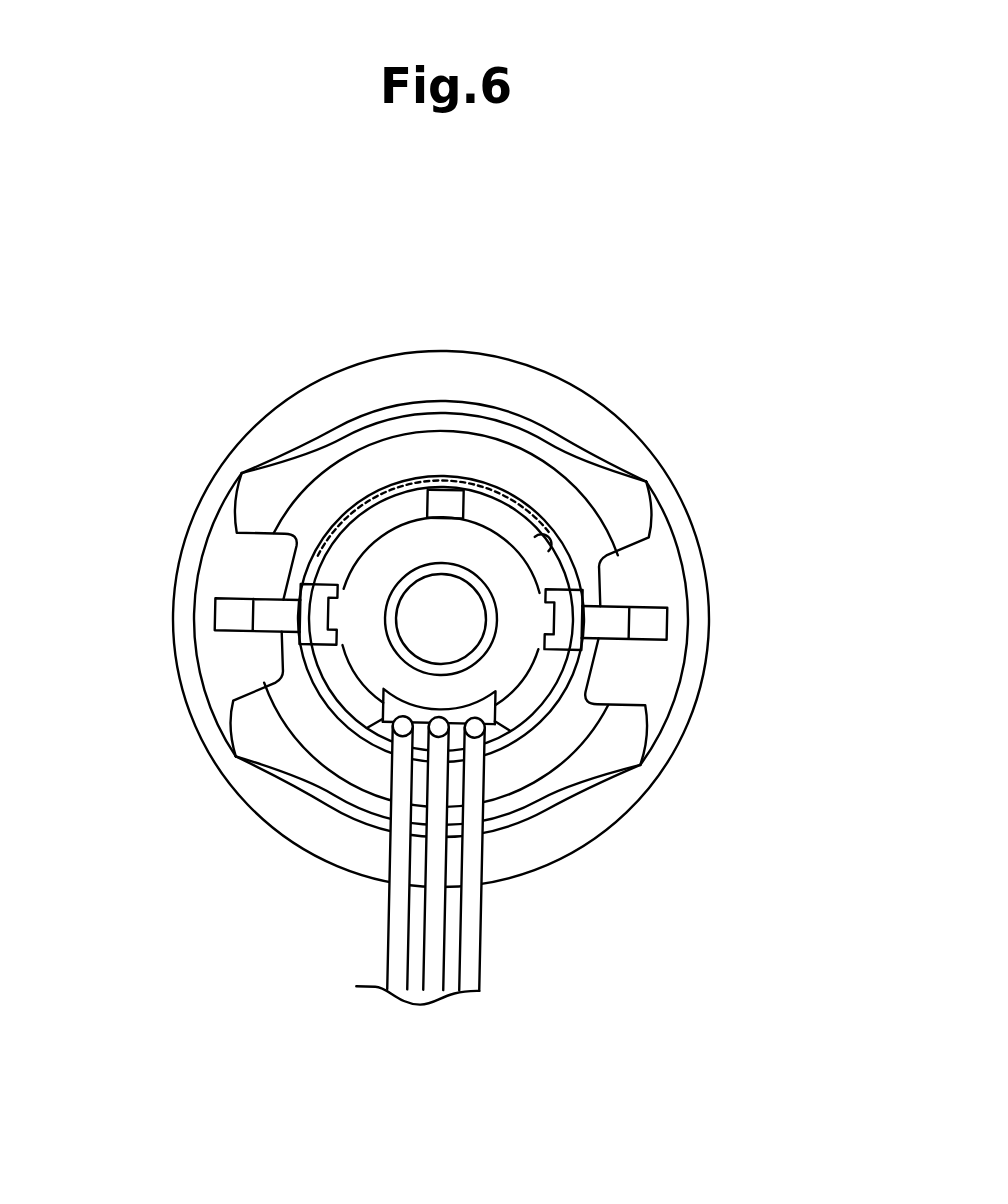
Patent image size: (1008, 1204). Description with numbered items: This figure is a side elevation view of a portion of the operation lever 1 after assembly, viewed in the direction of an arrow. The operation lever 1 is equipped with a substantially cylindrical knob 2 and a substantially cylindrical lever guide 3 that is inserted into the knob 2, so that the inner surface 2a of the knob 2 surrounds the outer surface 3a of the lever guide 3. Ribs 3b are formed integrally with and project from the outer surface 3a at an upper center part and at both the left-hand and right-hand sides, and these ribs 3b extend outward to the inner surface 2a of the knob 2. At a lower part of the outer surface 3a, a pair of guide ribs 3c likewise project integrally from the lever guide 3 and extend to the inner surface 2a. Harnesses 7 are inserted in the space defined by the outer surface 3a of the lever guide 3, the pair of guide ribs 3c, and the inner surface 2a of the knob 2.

The operation lever 1 is at (465, 634).
The knob 2 is at (628, 408).
The inner surface of the knob 2a is at (537, 548).
The lever guide 3 is at (398, 502).
The outer surface of the lever guide 3a is at (345, 533).
The ribs 3b is at (437, 488).
The guide ribs 3c is at (360, 705).
The harnesses 7 is at (482, 940).